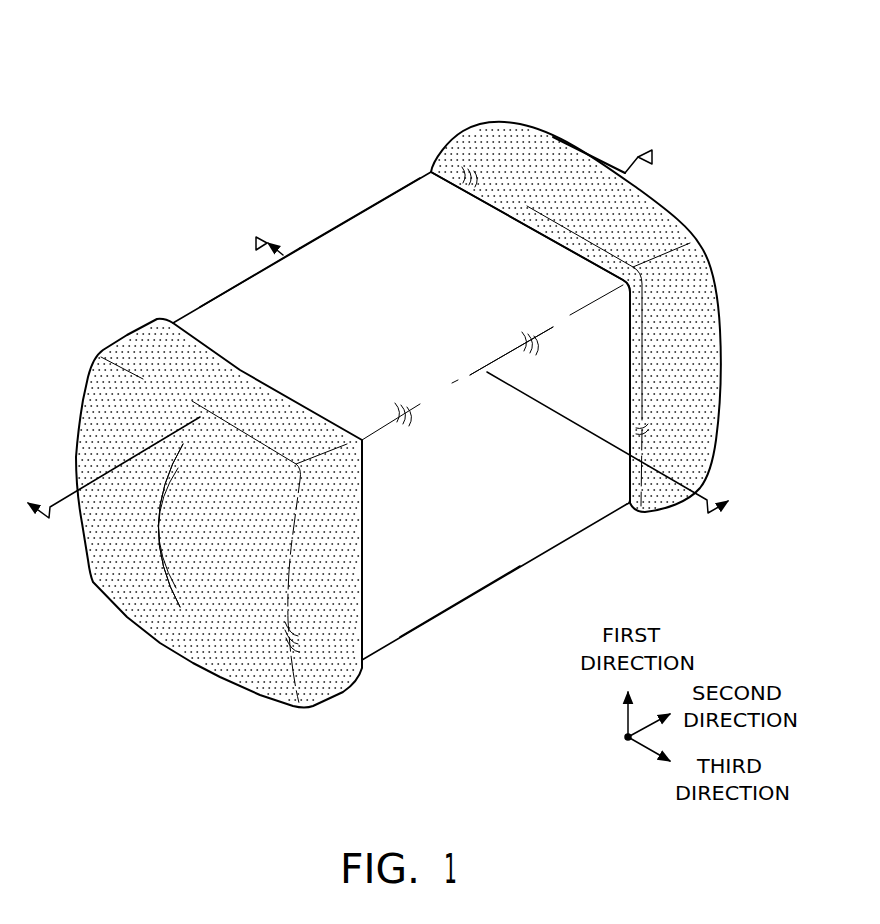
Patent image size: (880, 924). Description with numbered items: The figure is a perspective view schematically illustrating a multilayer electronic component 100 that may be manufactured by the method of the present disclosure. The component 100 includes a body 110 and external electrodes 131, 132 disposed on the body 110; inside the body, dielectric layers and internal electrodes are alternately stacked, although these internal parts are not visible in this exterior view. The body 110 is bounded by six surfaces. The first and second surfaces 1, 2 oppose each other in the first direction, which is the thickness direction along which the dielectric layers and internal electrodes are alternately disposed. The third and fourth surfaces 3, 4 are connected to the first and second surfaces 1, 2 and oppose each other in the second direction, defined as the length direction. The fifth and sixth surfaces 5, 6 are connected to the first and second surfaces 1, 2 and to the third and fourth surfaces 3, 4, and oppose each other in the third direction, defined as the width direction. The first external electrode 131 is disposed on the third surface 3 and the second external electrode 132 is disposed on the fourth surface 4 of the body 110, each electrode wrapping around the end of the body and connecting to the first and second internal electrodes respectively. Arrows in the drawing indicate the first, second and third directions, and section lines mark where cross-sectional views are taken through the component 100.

The multilayer electronic component 100 is at (270, 61).
The body 110 is at (335, 242).
The first external electrode 131 is at (133, 332).
The second external electrode 132 is at (478, 133).
The first surface 1 is at (462, 608).
The second surface 2 is at (383, 222).
The third surface 3 is at (140, 601).
The fourth surface 4 is at (572, 170).
The fifth surface 5 is at (221, 293).
The sixth surface 6 is at (530, 533).